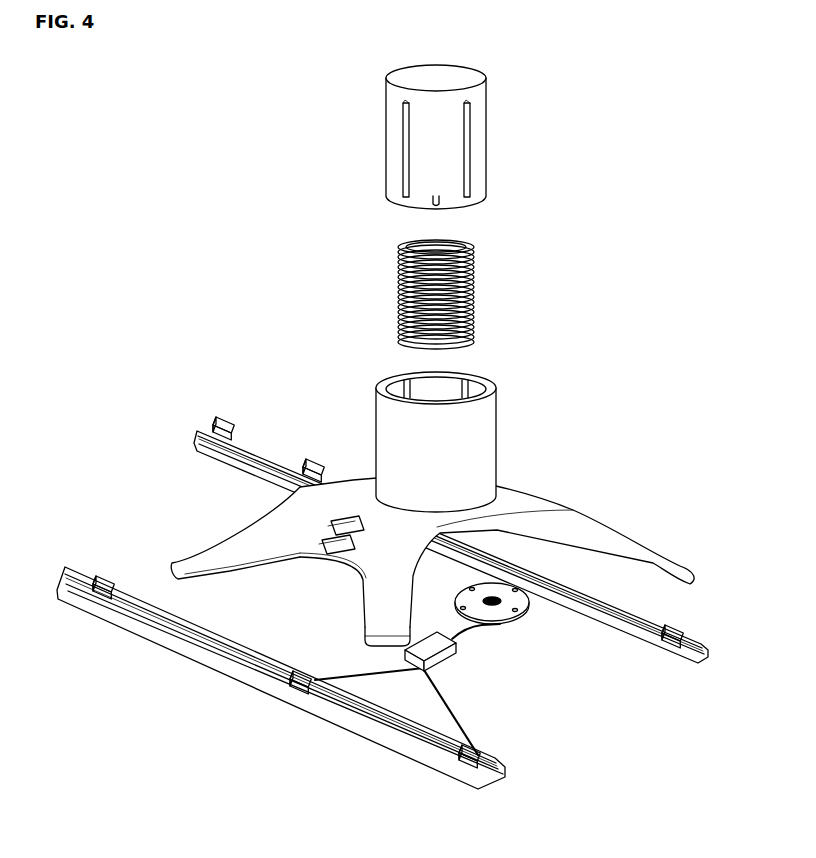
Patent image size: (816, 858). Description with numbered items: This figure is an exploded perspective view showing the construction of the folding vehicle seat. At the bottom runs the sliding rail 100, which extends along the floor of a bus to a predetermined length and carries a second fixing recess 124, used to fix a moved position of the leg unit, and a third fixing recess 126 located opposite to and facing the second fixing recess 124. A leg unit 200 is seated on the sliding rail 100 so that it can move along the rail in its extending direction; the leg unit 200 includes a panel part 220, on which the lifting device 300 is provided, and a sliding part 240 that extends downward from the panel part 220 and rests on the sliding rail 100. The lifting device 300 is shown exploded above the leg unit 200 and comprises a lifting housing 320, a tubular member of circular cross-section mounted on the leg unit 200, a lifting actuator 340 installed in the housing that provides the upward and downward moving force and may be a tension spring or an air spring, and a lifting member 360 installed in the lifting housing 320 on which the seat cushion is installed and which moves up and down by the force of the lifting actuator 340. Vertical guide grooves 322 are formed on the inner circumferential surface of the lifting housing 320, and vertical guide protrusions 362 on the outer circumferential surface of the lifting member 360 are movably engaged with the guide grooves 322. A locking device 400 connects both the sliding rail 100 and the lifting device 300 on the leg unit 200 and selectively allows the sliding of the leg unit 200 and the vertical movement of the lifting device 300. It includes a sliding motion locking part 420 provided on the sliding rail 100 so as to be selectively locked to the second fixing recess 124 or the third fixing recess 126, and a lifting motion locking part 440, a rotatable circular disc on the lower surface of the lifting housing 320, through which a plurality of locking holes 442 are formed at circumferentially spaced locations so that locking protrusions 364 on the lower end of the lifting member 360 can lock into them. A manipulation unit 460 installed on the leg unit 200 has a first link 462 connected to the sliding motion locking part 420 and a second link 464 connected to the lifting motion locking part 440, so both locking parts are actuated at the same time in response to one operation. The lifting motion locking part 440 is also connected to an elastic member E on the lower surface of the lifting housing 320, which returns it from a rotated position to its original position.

The sliding rail 100 is at (374, 578).
The second fixing recess 124 is at (108, 583).
The third fixing recess 126 is at (320, 465).
The leg unit 200 is at (390, 622).
The panel part 220 is at (342, 495).
The sliding part 240 is at (200, 563).
The lifting device 300 is at (429, 288).
The lifting housing 320 is at (458, 422).
The vertical guide grooves 322 is at (405, 385).
The lifting actuator 340 is at (475, 285).
The lifting member 360 is at (441, 154).
The vertical guide protrusions 362 is at (403, 140).
The locking protrusions 364 is at (440, 203).
The locking device 400 is at (461, 645).
The sliding motion locking part 420 is at (295, 683).
The lifting motion locking part 440 is at (567, 567).
The locking holes 442 is at (528, 615).
The manipulation unit 460 is at (473, 635).
The first link 462 is at (445, 705).
The second link 464 is at (470, 628).
The elastic member E is at (495, 598).